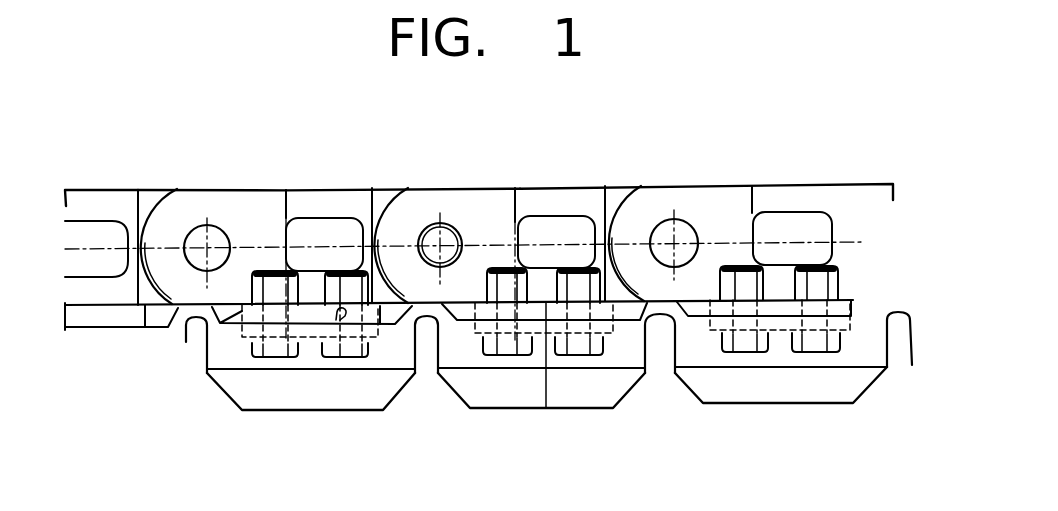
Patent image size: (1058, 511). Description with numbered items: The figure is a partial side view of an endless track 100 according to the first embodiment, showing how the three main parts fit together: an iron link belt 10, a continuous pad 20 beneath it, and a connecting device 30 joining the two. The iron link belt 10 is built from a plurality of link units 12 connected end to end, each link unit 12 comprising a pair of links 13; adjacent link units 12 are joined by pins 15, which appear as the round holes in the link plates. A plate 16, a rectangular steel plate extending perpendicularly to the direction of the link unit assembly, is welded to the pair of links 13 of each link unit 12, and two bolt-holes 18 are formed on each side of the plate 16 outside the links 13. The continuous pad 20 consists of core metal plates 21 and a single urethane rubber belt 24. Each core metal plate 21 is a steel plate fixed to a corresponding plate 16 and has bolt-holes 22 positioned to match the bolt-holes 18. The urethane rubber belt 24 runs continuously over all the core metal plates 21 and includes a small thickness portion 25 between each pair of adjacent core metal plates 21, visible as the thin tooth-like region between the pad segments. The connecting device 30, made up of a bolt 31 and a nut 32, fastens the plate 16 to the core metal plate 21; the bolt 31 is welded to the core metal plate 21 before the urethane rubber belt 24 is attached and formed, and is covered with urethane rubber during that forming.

The endless track 100 is at (640, 183).
The iron link belt 10 is at (505, 188).
The link unit 12 is at (262, 190).
The link 13 is at (233, 189).
The pin 15 is at (197, 226).
The plate 16 is at (190, 326).
The bolt-hole 18 is at (337, 340).
The continuous pad 20 is at (632, 388).
The core metal plate 21 is at (307, 330).
The bolt-hole 22 is at (372, 338).
The urethane rubber belt 24 is at (568, 388).
The small thickness portion 25 is at (190, 323).
The connecting device 30 is at (275, 411).
The bolt 31 is at (253, 343).
The nut 32 is at (292, 325).